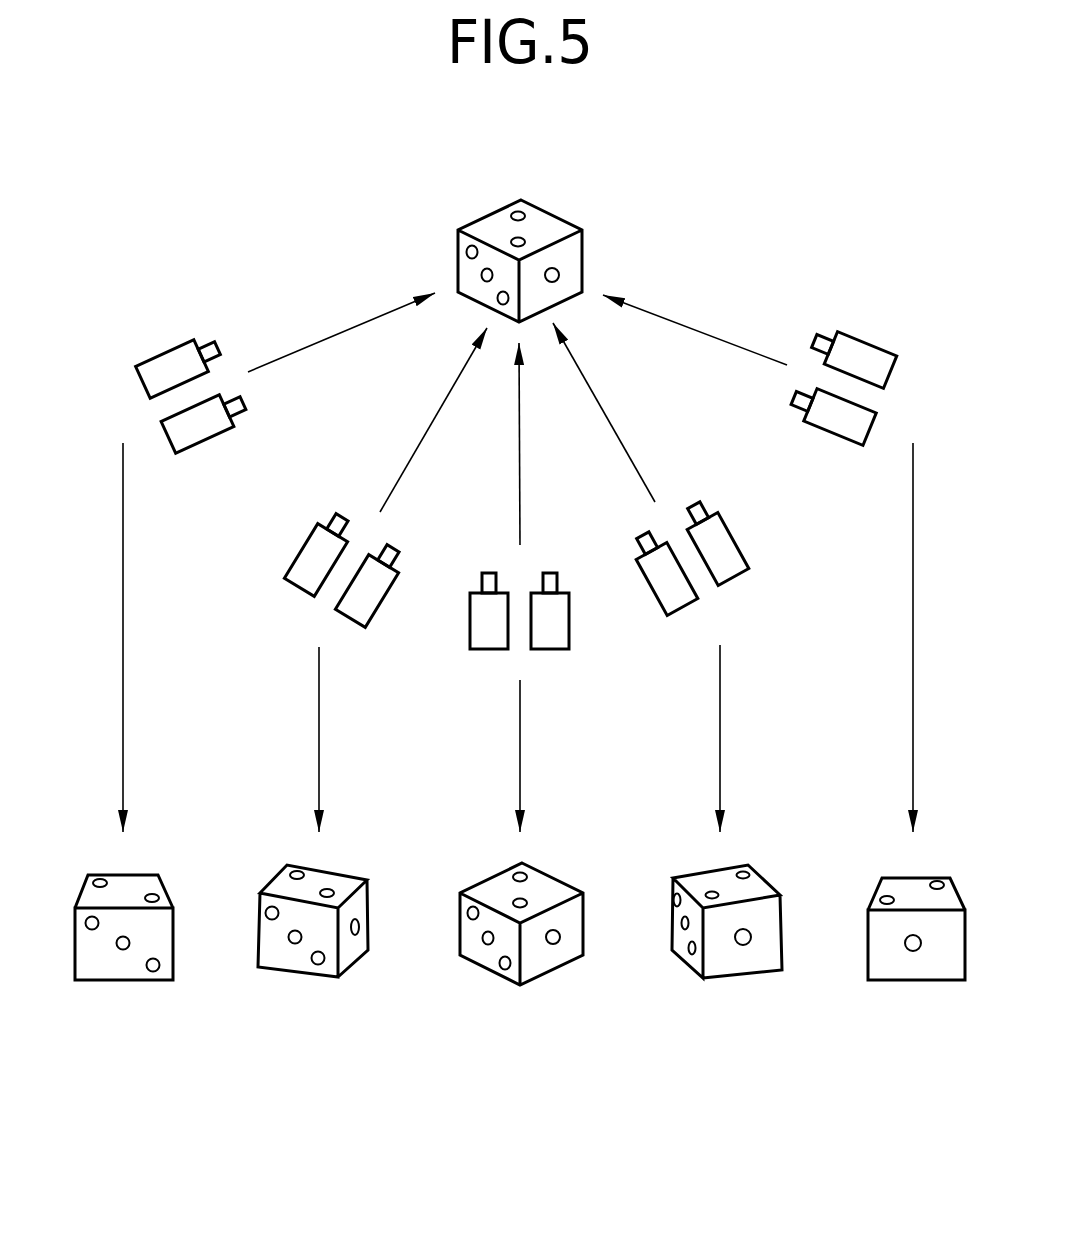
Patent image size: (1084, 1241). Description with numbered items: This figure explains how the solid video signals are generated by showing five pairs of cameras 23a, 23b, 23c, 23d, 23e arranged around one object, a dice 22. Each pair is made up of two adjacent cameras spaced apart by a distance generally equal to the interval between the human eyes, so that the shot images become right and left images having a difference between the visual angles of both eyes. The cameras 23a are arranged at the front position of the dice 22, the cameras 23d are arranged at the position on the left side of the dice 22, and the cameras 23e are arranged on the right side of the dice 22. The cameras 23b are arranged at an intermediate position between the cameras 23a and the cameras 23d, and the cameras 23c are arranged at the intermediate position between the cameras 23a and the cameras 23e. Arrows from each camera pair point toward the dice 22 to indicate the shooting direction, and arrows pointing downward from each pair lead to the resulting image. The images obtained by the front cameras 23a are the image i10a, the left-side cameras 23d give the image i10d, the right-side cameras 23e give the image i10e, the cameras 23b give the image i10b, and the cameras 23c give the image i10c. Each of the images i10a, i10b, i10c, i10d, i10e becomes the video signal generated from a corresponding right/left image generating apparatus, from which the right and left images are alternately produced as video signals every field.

The object (dice) 22 is at (547, 212).
The cameras arranged at the front position 23a is at (570, 627).
The camera arranged at an intermediate position between cameras 23a and 23d 23b is at (377, 618).
The camera arranged at the intermediate position between cameras 23a and 23e 23c is at (737, 540).
The cameras arranged at the position on the left side of the dice 23d is at (192, 452).
The cameras arranged on the right side of the dice 23e is at (878, 345).
The image i10a is at (512, 985).
The image i10b is at (315, 977).
The image i10c is at (710, 978).
The image i10d is at (115, 980).
The image i10e is at (905, 980).